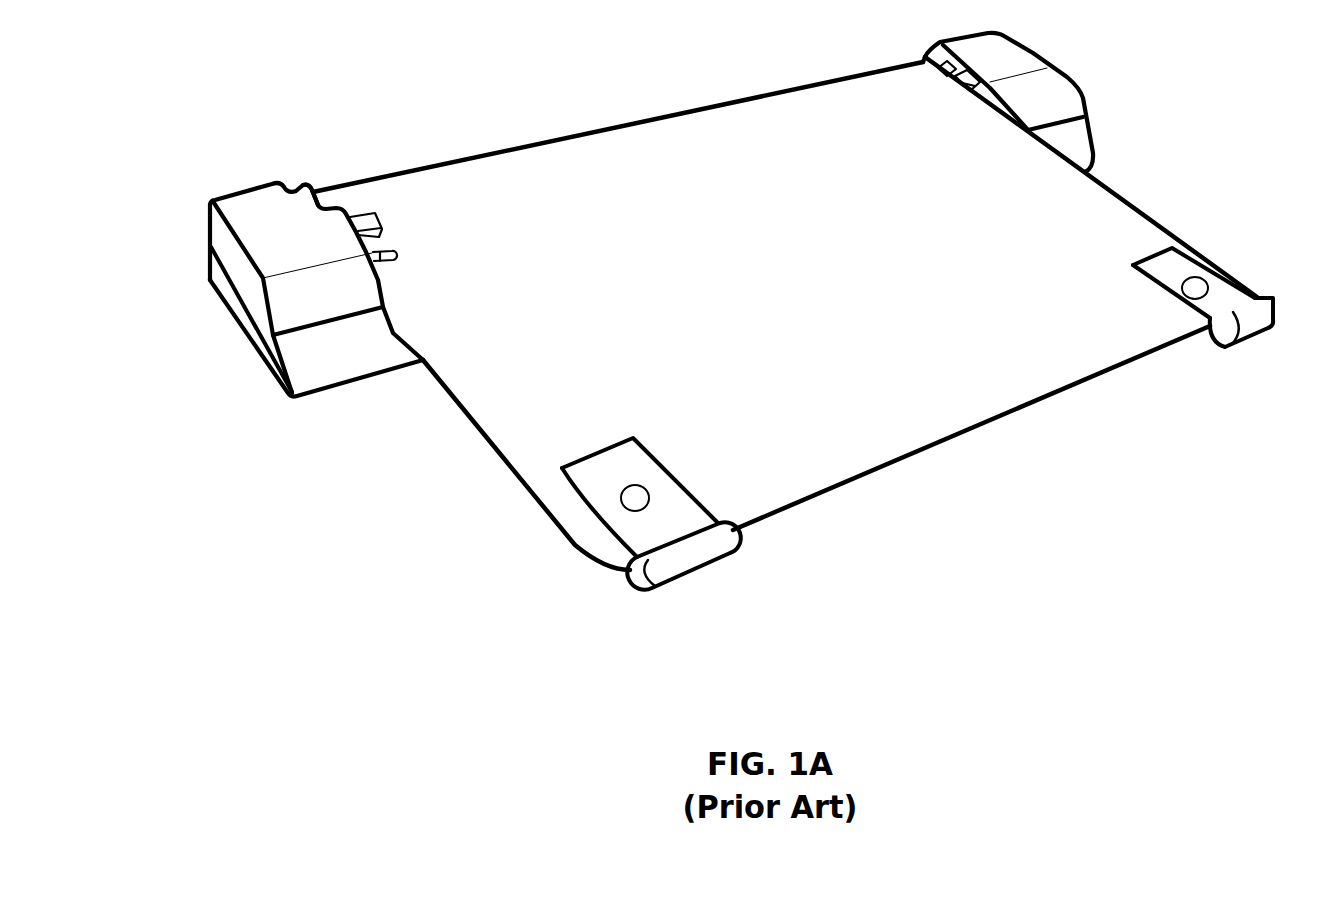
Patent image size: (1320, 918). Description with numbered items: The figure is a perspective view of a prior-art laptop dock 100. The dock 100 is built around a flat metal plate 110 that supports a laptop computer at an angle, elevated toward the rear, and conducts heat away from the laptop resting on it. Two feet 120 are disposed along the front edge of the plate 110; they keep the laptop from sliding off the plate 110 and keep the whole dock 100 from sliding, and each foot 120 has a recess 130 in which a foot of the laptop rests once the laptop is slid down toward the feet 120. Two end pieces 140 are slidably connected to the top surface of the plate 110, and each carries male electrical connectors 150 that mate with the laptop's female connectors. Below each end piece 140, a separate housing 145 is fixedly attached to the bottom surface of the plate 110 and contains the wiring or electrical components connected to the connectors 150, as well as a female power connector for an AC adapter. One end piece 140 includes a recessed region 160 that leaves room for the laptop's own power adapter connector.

The dock 100 is at (298, 44).
The flat metal plate 110 is at (695, 133).
The feet 120 is at (717, 547).
The recesses 130 is at (637, 495).
The end pieces 140 is at (243, 207).
The housings 145 is at (240, 312).
The male electrical connectors 150 is at (373, 220).
The recessed region 160 is at (336, 174).